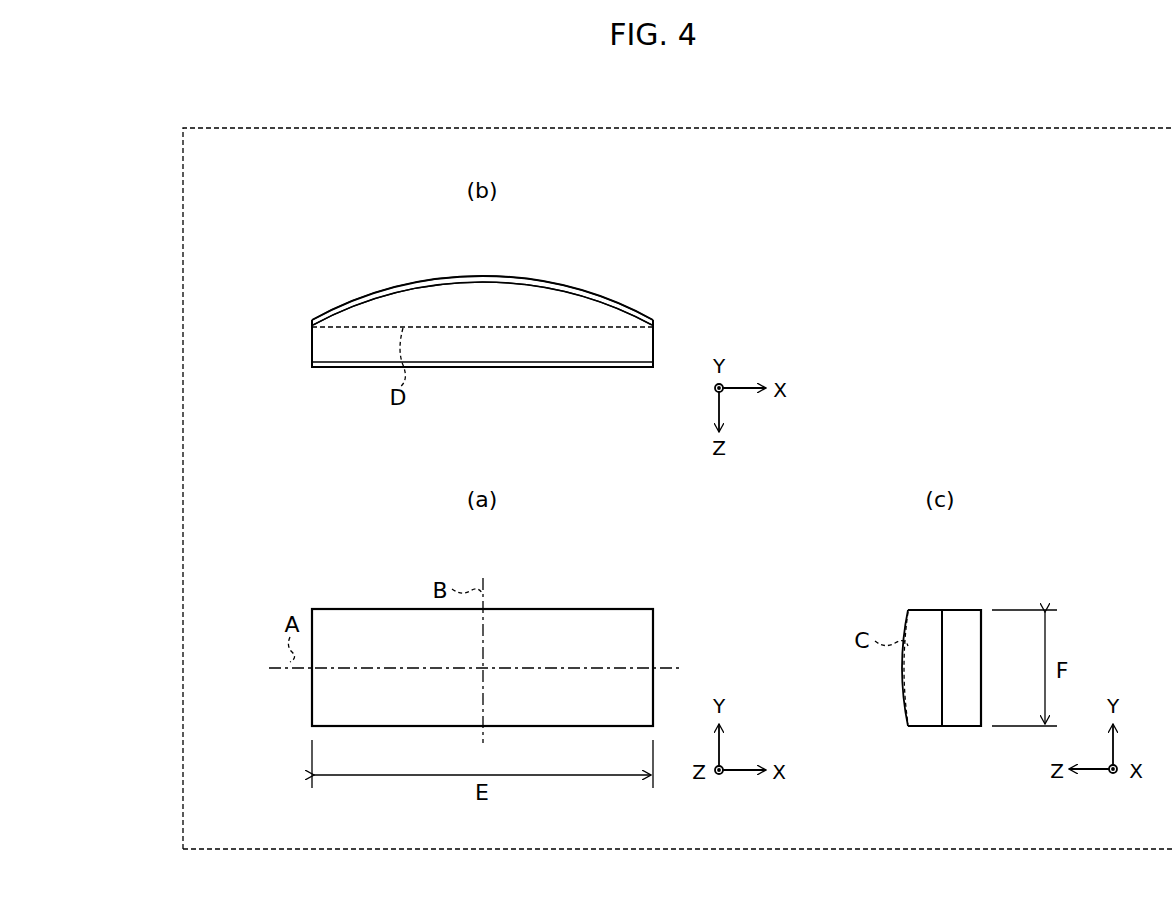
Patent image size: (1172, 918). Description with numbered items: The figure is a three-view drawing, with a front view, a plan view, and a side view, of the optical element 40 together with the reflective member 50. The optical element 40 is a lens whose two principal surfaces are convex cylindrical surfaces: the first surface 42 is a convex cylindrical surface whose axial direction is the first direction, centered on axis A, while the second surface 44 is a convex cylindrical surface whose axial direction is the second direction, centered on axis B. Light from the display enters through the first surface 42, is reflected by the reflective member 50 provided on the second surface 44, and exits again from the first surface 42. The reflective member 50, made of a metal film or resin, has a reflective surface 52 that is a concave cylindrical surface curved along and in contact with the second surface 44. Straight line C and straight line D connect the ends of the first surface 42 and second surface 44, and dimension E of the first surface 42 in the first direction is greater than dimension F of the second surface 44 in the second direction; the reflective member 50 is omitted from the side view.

The optical element 40 is at (561, 370).
The first surface 42 is at (487, 363).
The second surface 44 is at (485, 277).
The reflective member 50 is at (421, 282).
The reflective surface 52 is at (391, 299).